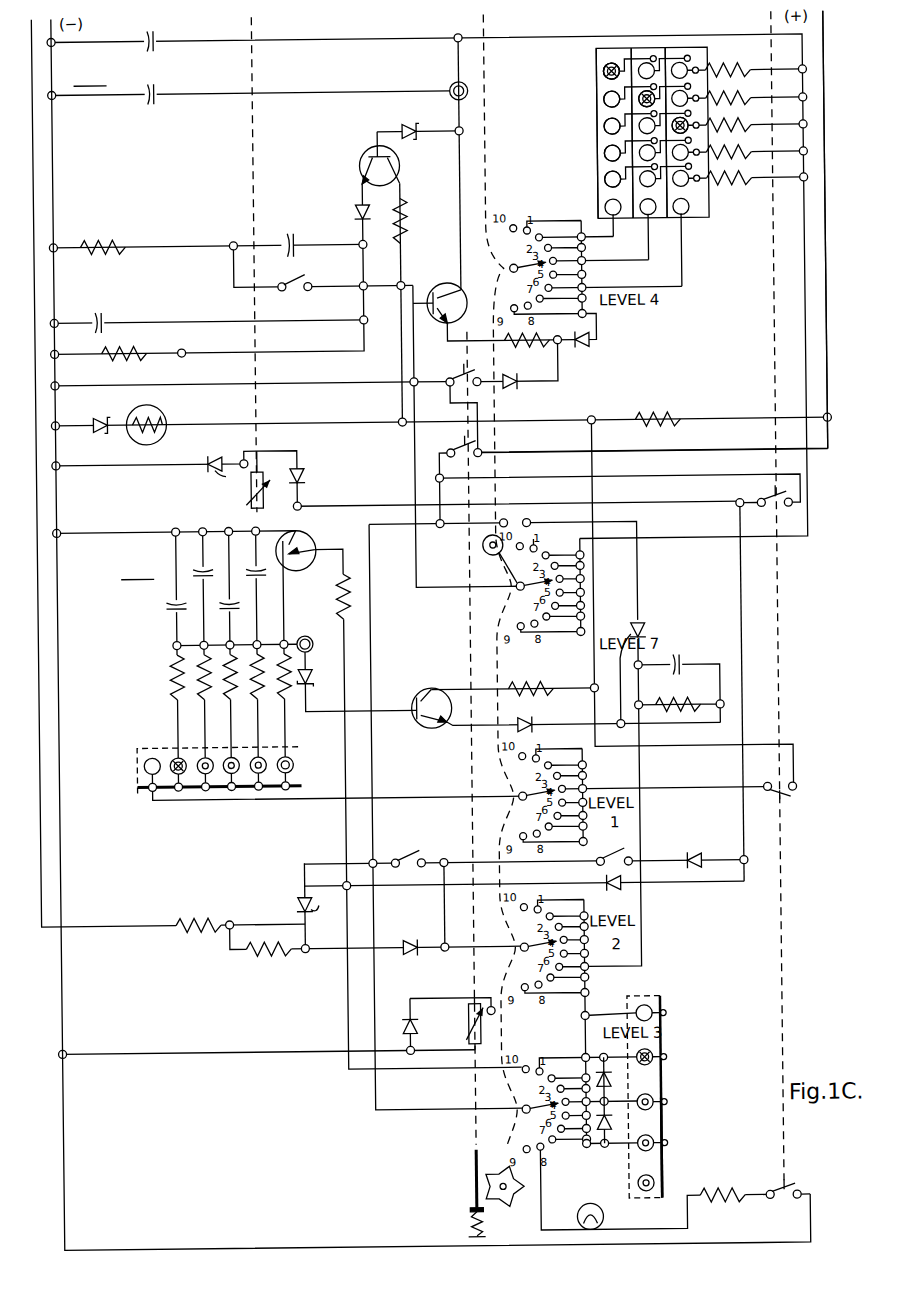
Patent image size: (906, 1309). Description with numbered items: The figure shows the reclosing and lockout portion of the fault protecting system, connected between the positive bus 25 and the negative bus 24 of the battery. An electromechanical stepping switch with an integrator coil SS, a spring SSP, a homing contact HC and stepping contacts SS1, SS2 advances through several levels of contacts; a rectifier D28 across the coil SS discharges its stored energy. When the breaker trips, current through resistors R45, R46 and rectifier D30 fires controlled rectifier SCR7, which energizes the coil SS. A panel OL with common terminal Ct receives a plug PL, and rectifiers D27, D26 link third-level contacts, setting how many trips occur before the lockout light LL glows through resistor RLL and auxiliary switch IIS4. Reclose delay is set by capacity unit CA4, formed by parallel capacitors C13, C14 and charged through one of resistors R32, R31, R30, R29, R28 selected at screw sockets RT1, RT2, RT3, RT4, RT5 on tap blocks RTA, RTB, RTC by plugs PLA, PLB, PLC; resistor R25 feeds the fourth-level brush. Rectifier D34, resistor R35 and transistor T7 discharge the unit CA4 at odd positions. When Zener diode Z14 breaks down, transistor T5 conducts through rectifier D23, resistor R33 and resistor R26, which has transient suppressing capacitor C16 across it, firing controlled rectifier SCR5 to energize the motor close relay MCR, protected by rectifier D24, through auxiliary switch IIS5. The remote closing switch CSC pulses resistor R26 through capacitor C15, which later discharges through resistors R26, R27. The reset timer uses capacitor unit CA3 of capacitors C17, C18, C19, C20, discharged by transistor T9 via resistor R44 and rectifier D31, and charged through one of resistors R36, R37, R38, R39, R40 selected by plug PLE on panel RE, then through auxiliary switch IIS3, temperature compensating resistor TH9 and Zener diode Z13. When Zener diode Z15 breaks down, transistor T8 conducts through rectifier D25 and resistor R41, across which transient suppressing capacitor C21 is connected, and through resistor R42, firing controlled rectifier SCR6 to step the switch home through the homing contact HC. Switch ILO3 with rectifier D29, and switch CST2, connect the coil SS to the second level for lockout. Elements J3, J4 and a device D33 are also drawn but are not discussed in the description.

The negative bus 24 is at (58, 175).
The positive bus 25 is at (830, 340).
The capacitor C13 is at (153, 32).
The capacitor C14 is at (158, 82).
The capacity unit CA4 is at (89, 77).
The jack J3 is at (458, 86).
The Zener diode Z14 is at (415, 124).
The transistor T5 is at (365, 165).
The rectifier D23 is at (360, 208).
The resistor R33 is at (412, 228).
The resistor R27 is at (92, 243).
The capacitor C15 is at (294, 231).
The single pole single throw switch CSC is at (309, 279).
The transient suppressing capacitor C16 is at (105, 310).
The resistor R26 is at (152, 350).
The transistor T7 is at (447, 290).
The Zener diode Z13 is at (102, 416).
The resistor TH9 is at (165, 406).
The silicon controlled rectifier SCR5 is at (212, 470).
The motor close relay MCR is at (252, 496).
The rectifier D24 is at (308, 468).
The stepping contact SS2 is at (466, 370).
The resistor R35 is at (546, 344).
The diode D33 is at (518, 391).
The rectifier D34 is at (590, 347).
The stepping contacts SS1 is at (462, 449).
The homing contact HC is at (518, 517).
The resistor R25 is at (648, 416).
The auxiliary switch IIS5 is at (764, 496).
The transistor T9 is at (302, 534).
The capacitor unit CA3 is at (137, 570).
The capacitor C19 is at (195, 568).
The capacitor C17 is at (249, 568).
The capacitor C20 is at (168, 607).
The capacitor C18 is at (222, 612).
The resistor R44 is at (338, 592).
The jack J4 is at (311, 638).
The resistor R40 is at (170, 660).
The resistor R39 is at (200, 700).
The resistor R38 is at (228, 706).
The resistor R36 is at (262, 704).
The resistor R37 is at (286, 706).
The Zener diode Z15 is at (310, 686).
The tap block RE is at (136, 752).
The plug PLE is at (170, 758).
The silicon controlled rectifier SCR6 is at (645, 630).
The transient suppressing capacitor C21 is at (676, 656).
The resistor R41 is at (672, 704).
The resistor R42 is at (526, 688).
The rectifier D25 is at (526, 720).
The transistor T8 is at (412, 724).
The auxiliary switch IIS3 is at (782, 798).
The switch CST2 is at (410, 855).
The switch ILO3 is at (609, 856).
The rectifier D29 is at (686, 856).
The rectifier D31 is at (604, 880).
The silicon controlled rectifier SCR7 is at (296, 898).
The resistor R45 is at (200, 918).
The resistor R46 is at (255, 955).
The rectifier D30 is at (418, 940).
The rectifier D28 is at (404, 1012).
The integrator coil SS is at (462, 1015).
The rectifier D27 is at (605, 1052).
The rectifier D26 is at (600, 1146).
The common terminal Ct is at (632, 1012).
The plug PL is at (648, 1056).
The panel OL is at (658, 1142).
The lockout light LL is at (575, 1206).
The spring SSP is at (463, 1210).
The resistor RLL is at (718, 1194).
The auxiliary switch IIS4 is at (780, 1192).
The reclose timer panel RTA is at (605, 48).
The reclose timer panel RTB is at (648, 48).
The reclose timer panel RTC is at (690, 48).
The plug PLA is at (610, 68).
The connection screw socket RT1 is at (603, 68).
The connection screw socket RT2 is at (603, 98).
The plug PLB is at (645, 99).
The connection screw socket RT3 is at (603, 122).
The plug PLC is at (680, 128).
The connection screw socket RT4 is at (603, 155).
The connection screw socket RT5 is at (603, 179).
The resistor R32 is at (727, 68).
The resistor R31 is at (740, 98).
The resistor R30 is at (745, 125).
The resistor R29 is at (745, 152).
The resistor R28 is at (754, 186).